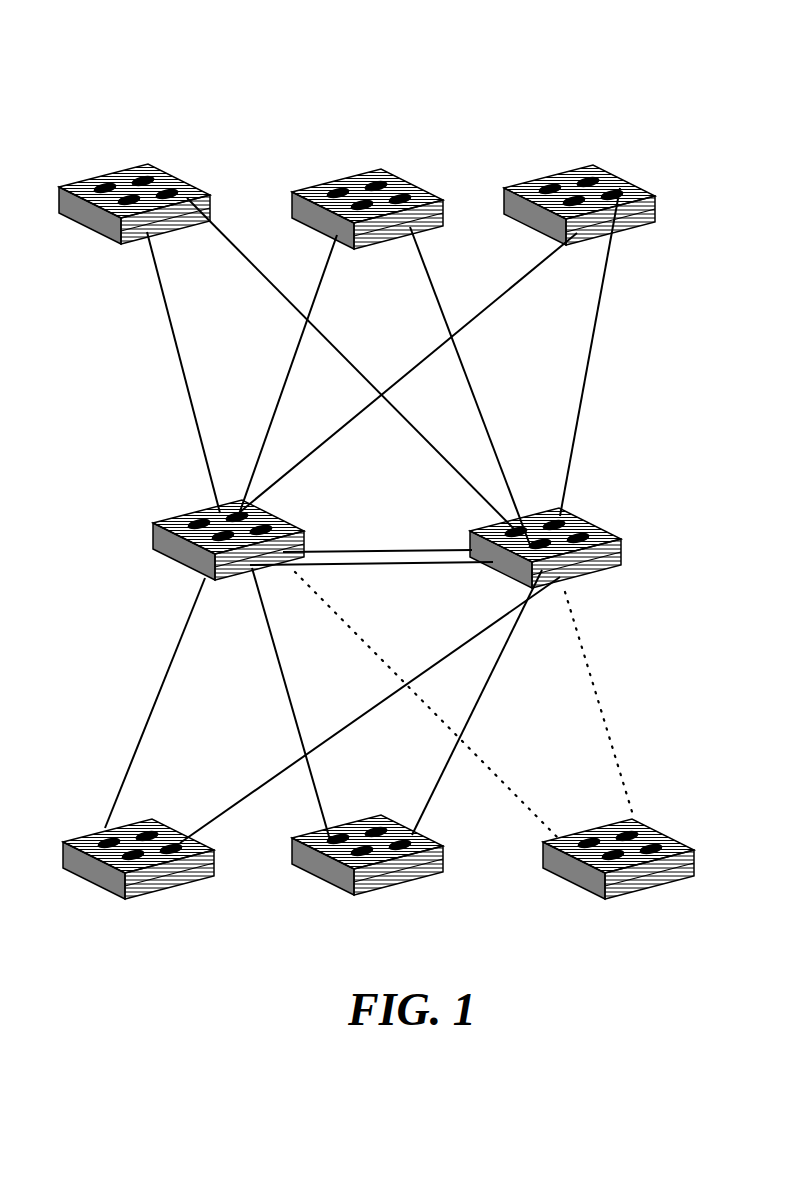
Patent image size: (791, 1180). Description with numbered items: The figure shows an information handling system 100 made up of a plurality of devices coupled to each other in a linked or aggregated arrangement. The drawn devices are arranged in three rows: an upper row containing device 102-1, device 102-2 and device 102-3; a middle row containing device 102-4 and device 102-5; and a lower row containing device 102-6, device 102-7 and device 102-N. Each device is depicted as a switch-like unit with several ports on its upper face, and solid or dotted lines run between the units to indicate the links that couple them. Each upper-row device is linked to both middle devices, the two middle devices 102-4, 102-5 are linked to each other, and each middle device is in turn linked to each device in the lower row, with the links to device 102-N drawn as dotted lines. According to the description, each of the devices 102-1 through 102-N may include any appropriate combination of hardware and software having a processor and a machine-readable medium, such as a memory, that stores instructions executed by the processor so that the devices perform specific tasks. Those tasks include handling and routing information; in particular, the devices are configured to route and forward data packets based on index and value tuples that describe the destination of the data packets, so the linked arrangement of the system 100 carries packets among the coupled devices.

The information handling system 100 is at (73, 40).
The device 102-1 is at (134, 183).
The device 102-2 is at (367, 185).
The device 102-3 is at (579, 183).
The device 102-4 is at (198, 534).
The device 102-5 is at (571, 539).
The device 102-6 is at (138, 881).
The device 102-7 is at (367, 879).
The device 102-N is at (618, 881).